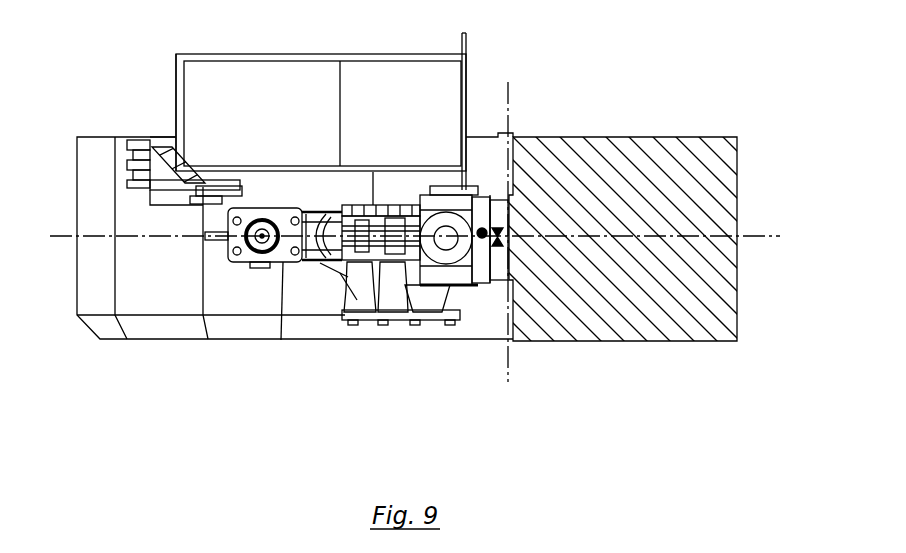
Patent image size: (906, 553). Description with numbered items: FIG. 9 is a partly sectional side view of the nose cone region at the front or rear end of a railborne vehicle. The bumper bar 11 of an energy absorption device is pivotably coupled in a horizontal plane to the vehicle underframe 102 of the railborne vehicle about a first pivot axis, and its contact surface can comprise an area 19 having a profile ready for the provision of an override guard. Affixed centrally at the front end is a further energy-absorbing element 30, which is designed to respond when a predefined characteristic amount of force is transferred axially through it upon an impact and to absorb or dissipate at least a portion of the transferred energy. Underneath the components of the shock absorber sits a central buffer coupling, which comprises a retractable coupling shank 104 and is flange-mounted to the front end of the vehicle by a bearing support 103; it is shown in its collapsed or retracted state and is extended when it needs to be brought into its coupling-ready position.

The area having a profile 19 is at (130, 158).
The bumper bar 11 is at (153, 145).
The energy-absorbing element 30 is at (321, 111).
The vehicle underframe 102 is at (592, 152).
The bearing support 103 is at (483, 315).
The coupling shank 104 is at (284, 305).